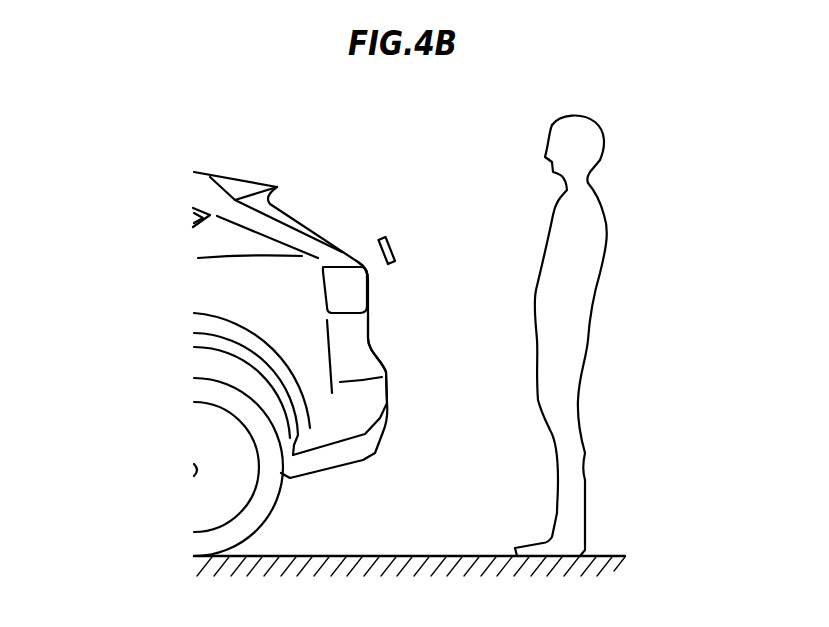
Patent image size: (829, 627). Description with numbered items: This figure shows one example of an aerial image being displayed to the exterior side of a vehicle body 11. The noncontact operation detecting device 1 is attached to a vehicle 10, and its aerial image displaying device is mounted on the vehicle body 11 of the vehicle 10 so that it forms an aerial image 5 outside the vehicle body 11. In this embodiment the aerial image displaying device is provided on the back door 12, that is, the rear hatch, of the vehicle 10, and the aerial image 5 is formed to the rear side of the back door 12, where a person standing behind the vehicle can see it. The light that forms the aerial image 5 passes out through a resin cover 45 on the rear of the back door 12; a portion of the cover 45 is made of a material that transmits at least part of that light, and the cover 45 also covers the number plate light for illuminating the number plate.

The vehicle 10 is at (193, 163).
The vehicle body 11 is at (255, 182).
The aerial image 5 is at (395, 253).
The noncontact operation detecting device 1 is at (375, 278).
The cover 45 is at (360, 298).
The back door 12 is at (360, 337).